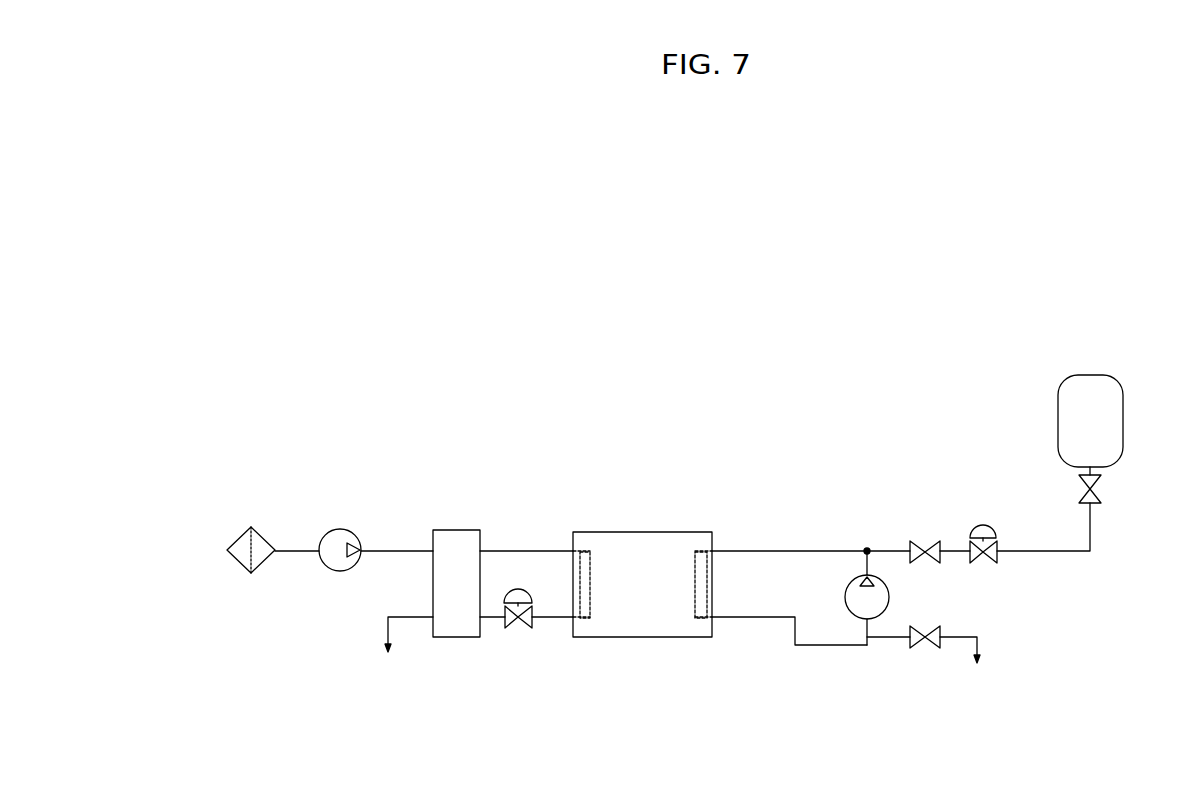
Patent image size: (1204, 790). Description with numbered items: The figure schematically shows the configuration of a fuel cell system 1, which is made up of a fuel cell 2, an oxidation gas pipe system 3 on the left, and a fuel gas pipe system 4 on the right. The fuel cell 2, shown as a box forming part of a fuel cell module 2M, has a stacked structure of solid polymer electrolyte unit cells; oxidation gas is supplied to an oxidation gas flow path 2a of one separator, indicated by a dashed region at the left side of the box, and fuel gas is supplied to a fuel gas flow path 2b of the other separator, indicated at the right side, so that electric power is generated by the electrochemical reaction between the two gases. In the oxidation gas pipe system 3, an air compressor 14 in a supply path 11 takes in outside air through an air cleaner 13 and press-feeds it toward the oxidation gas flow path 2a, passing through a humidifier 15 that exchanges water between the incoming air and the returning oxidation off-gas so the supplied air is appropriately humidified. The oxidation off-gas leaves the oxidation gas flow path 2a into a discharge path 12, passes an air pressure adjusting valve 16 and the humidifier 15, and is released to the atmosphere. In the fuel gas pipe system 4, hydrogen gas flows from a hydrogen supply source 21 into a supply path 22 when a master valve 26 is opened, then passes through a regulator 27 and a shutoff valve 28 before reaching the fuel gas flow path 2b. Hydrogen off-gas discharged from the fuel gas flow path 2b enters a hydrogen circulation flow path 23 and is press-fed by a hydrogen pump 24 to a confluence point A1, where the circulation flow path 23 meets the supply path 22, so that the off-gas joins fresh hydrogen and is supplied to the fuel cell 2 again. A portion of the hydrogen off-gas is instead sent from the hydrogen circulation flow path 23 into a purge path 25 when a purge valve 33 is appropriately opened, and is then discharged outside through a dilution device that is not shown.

The fuel cell system 1 is at (1030, 320).
The fuel cell 2 is at (648, 638).
The oxidation gas flow path 2a is at (590, 583).
The fuel gas flow path 2b is at (697, 590).
The fuel cell module 2M is at (670, 469).
The oxidation gas pipe system 3 is at (388, 532).
The fuel gas pipe system 4 is at (983, 503).
The supply path 11 is at (507, 547).
The discharge path 12 is at (540, 622).
The air cleaner 13 is at (263, 530).
The air compressor 14 is at (340, 529).
The humidifier 15 is at (453, 638).
The air pressure adjusting valve 16 is at (522, 588).
The hydrogen supply source 21 is at (1123, 422).
The supply path 22 is at (1097, 548).
The hydrogen circulation flow path 23 is at (823, 648).
The hydrogen pump 24 is at (846, 597).
The purge path 25 is at (980, 643).
The master valve 26 is at (1103, 492).
The regulator 27 is at (1000, 545).
The shutoff valve 28 is at (927, 543).
The purge valve 33 is at (928, 644).
The confluence point A1 is at (866, 547).